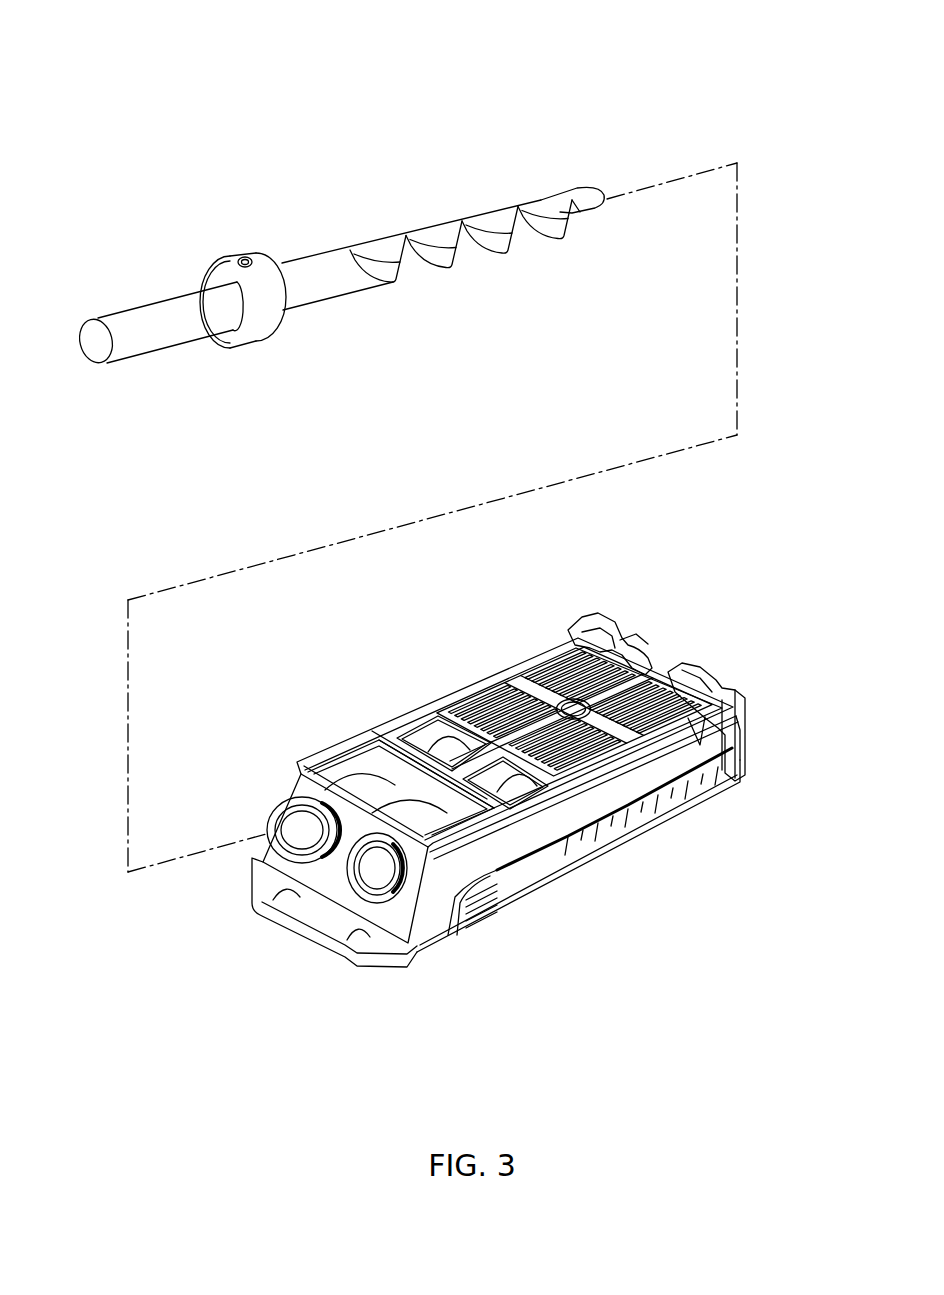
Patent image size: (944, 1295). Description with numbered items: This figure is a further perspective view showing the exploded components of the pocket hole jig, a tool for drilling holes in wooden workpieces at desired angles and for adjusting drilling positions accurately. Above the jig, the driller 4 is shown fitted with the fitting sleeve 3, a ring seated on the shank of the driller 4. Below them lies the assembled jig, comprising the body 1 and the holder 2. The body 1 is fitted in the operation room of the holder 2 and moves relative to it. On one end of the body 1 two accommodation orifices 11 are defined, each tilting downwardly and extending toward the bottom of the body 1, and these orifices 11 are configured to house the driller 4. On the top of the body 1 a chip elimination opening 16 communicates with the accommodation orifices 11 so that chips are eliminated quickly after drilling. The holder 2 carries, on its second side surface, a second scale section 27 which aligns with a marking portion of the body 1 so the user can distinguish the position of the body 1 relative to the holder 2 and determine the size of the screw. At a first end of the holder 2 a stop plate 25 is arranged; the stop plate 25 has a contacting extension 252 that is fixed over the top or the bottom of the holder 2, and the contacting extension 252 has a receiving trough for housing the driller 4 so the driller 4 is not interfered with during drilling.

The body 1 is at (516, 662).
The holder 2 is at (590, 866).
The fitting sleeve 3 is at (261, 259).
The driller 4 is at (157, 300).
The accommodation orifice 11 is at (302, 818).
The chip elimination opening 16 is at (442, 767).
The stop plate 25 is at (740, 742).
The second scale section 27 is at (687, 777).
The contacting extension 252 is at (607, 620).